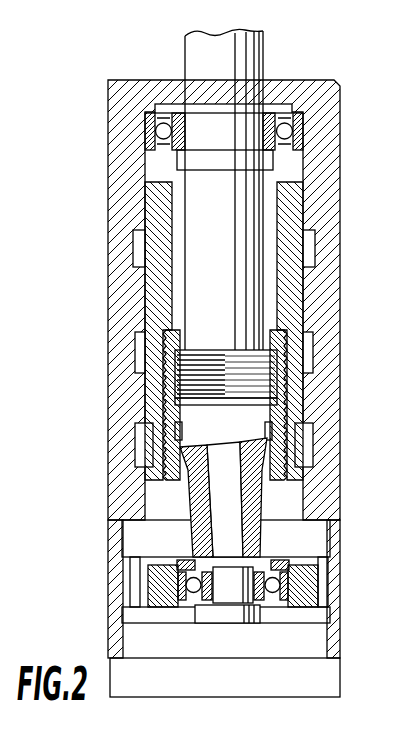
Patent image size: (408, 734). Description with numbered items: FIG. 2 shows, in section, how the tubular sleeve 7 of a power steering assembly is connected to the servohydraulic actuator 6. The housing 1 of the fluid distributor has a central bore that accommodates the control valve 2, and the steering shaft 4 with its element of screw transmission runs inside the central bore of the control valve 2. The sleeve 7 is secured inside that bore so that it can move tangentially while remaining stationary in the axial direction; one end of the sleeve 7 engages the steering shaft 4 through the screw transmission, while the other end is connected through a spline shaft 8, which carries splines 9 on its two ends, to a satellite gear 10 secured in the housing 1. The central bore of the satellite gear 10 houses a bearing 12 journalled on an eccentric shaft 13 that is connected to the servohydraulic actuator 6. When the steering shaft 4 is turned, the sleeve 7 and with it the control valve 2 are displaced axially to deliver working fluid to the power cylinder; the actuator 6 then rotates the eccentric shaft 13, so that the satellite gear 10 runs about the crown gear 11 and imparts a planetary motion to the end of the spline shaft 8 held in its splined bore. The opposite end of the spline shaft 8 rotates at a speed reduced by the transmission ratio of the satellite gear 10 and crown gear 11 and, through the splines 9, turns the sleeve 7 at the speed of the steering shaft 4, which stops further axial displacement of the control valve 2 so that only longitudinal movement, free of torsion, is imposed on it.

The housing 1 is at (122, 298).
The control valve 2 is at (295, 207).
The steering shaft 4 is at (250, 63).
The servohydraulic actuator 6 is at (328, 672).
The tubular sleeve 7 is at (270, 415).
The spline shaft 8 is at (193, 506).
The splines 9 is at (325, 502).
The satellite gear 10 is at (300, 542).
The crown gear 11 is at (128, 572).
The bearing 12 is at (182, 598).
The eccentric shaft 13 is at (237, 617).